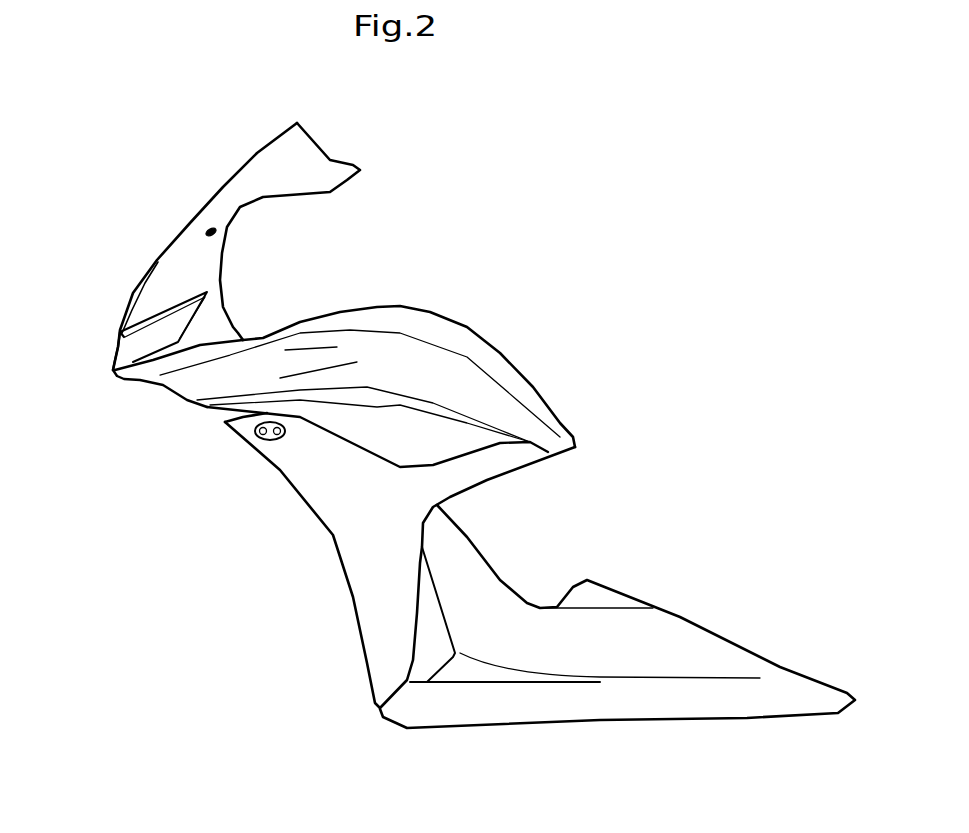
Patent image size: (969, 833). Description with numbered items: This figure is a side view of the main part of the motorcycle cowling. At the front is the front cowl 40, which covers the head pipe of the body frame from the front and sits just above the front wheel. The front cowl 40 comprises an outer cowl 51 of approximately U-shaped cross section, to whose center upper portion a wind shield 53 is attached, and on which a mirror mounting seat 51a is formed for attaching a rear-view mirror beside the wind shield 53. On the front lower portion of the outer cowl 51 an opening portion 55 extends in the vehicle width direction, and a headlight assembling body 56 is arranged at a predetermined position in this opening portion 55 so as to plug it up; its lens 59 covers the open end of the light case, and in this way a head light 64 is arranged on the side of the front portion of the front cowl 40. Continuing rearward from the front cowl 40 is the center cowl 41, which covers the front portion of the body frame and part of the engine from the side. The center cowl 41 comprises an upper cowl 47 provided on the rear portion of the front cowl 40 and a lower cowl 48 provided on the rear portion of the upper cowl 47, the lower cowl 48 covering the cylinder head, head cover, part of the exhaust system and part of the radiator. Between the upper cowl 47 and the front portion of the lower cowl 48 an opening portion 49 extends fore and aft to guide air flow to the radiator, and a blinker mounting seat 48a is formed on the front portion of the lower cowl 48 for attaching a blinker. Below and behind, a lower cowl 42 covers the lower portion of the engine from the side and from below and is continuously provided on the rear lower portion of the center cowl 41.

The front cowl 40 is at (137, 290).
The center cowl 41 is at (633, 385).
The lower cowl 42 is at (700, 647).
The upper cowl 47 is at (547, 418).
The lower cowl 48 is at (508, 463).
The blinker mounting seat 48a is at (272, 440).
The opening portion 49 is at (249, 418).
The outer cowl 51 is at (183, 257).
The mirror mounting seat 51a is at (216, 235).
The wind shield 53 is at (298, 147).
The opening portion 55 is at (163, 315).
The headlight assembling body 56 is at (114, 366).
The lens 59 is at (143, 343).
The head light 64 is at (117, 336).